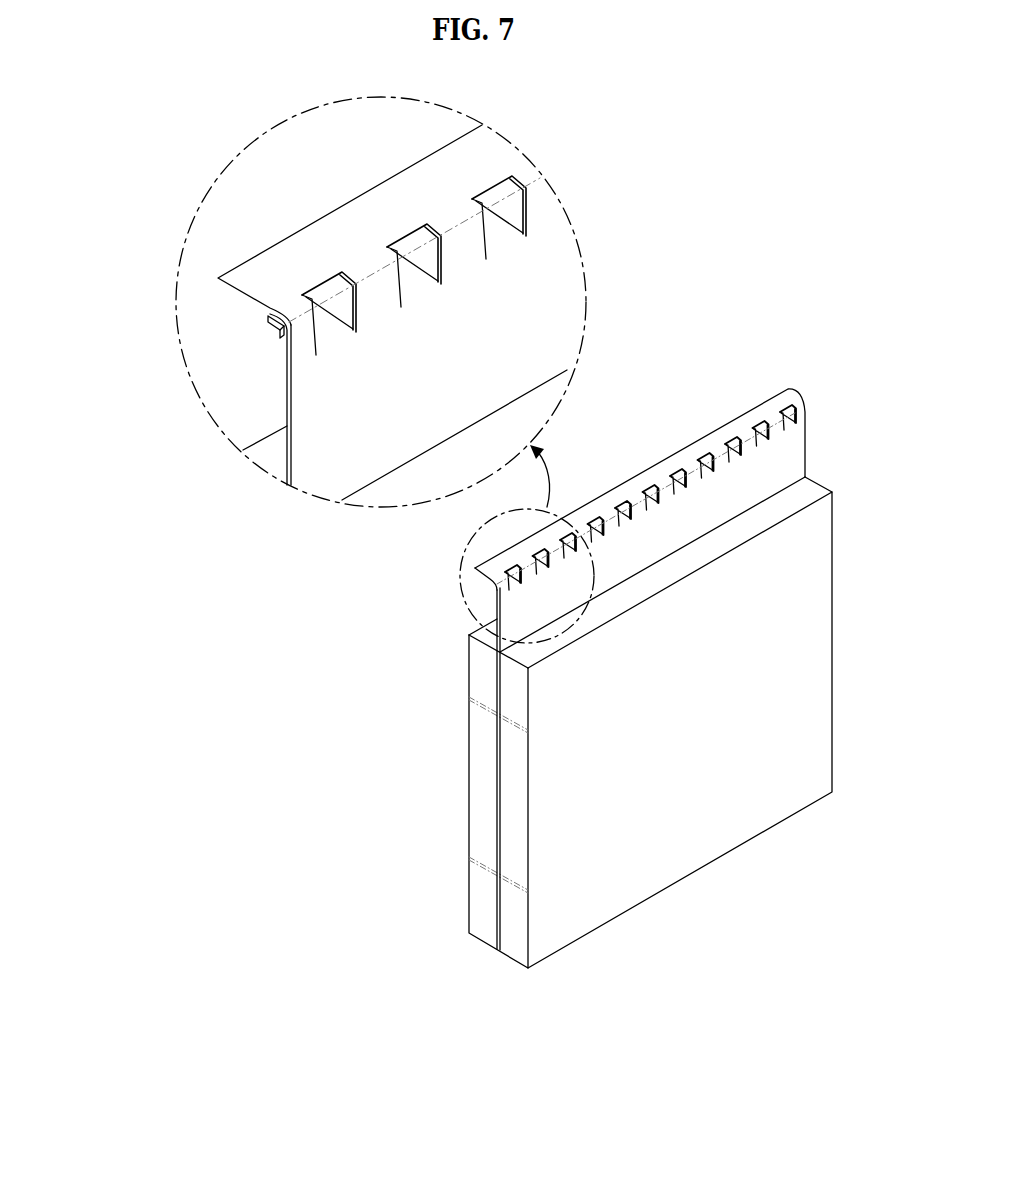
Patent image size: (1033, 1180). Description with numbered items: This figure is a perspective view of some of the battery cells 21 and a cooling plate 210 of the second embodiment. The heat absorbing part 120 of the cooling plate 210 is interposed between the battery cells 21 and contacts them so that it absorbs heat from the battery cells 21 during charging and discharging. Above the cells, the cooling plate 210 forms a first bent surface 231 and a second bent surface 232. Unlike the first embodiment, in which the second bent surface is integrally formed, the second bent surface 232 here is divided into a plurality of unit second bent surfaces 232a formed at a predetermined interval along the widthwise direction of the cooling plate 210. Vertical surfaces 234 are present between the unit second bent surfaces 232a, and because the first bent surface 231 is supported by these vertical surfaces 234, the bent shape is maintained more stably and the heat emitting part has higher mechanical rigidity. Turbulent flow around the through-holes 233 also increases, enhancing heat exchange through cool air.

The cooling plate 210 is at (848, 419).
The battery cell 21 is at (513, 940).
The heat absorbing part 120 is at (497, 778).
The first bent surface 231 is at (375, 207).
The second bent surface 232 is at (98, 325).
The unit second bent surface 232a is at (268, 324).
The through-hole 233 is at (424, 257).
The vertical surface 234 is at (383, 287).